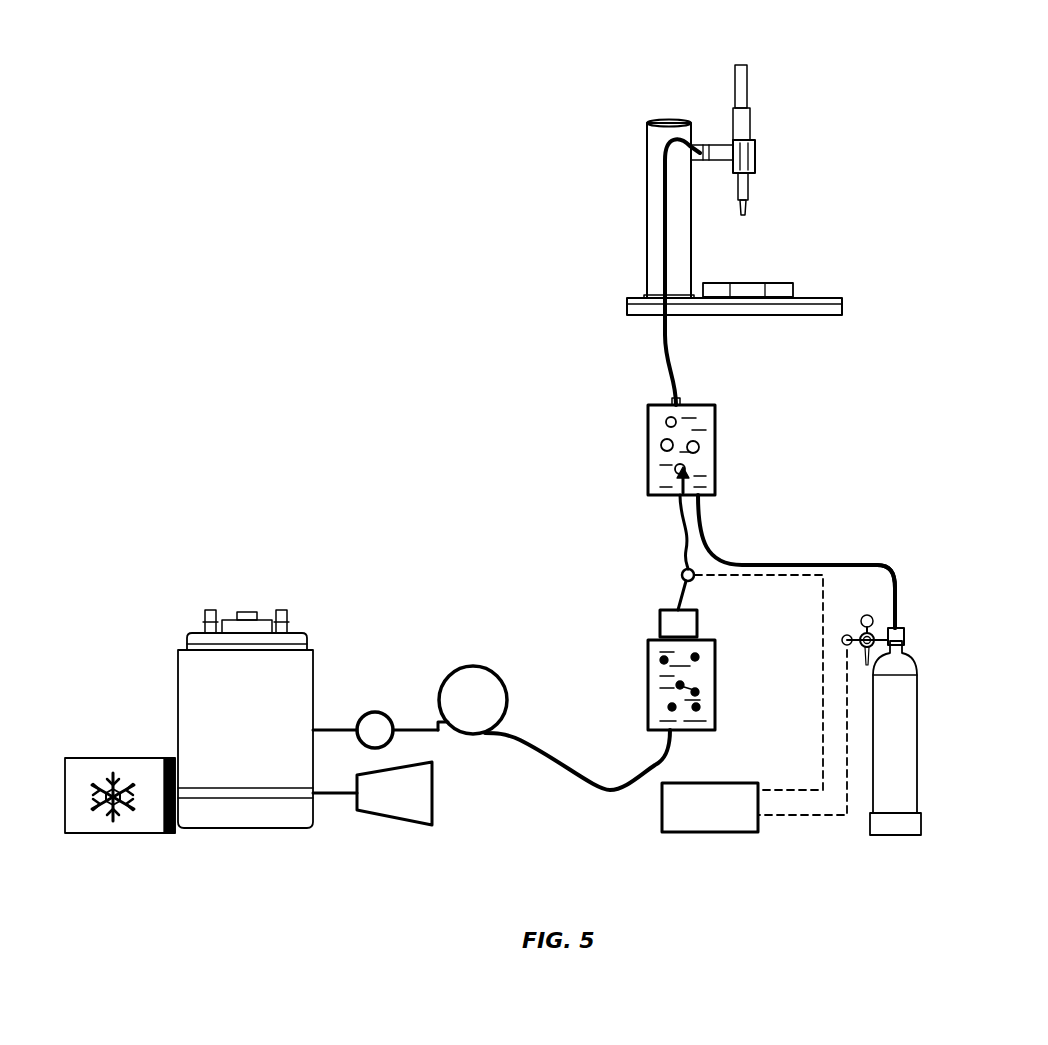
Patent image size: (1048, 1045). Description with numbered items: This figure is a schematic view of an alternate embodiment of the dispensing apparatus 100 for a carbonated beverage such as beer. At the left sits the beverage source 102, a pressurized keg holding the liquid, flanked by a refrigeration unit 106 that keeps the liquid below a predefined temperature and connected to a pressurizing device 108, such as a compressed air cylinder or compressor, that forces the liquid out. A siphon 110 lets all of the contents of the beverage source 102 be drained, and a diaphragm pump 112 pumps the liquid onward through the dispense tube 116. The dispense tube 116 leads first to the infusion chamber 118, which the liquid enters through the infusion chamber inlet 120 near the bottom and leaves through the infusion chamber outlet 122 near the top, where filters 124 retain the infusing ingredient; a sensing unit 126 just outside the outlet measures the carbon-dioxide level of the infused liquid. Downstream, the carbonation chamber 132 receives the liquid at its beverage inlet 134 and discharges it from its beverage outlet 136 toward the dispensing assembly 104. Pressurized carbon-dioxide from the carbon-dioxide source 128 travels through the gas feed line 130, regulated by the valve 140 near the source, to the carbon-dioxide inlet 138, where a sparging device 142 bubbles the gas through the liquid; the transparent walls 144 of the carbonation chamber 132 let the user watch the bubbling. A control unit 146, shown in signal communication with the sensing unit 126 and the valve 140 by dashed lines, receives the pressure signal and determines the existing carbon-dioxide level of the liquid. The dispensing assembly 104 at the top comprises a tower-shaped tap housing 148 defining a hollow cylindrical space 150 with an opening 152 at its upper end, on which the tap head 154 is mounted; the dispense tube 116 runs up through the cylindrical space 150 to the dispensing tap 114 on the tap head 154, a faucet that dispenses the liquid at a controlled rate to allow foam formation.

The dispensing apparatus 100 is at (882, 97).
The beverage source 102 is at (192, 707).
The dispensing assembly 104 is at (599, 136).
The refrigeration unit 106 is at (95, 763).
The pressurizing device 108 is at (412, 803).
The siphon 110 is at (375, 712).
The diaphragm pump 112 is at (455, 687).
The dispensing tap 114 is at (751, 73).
The dispense tube 116 is at (667, 325).
The infusion chamber 118 is at (655, 703).
The infusion chamber inlet 120 is at (672, 732).
The infusion chamber outlet 122 is at (697, 623).
The filters 124 is at (660, 622).
The sensing unit 126 is at (682, 577).
The carbon-dioxide source 128 is at (917, 770).
The gas feed line 130 is at (907, 580).
The carbonation chamber 132 is at (662, 432).
The beverage inlet 134 is at (680, 495).
The beverage outlet 136 is at (676, 404).
The carbon-dioxide inlet 138 is at (710, 497).
The valve 140 is at (905, 640).
The sparging device 142 is at (680, 478).
The transparent walls 144 is at (717, 418).
The control unit 146 is at (754, 703).
The tap housing 148 is at (647, 228).
The hollow cylindrical space 150 is at (683, 243).
The opening 152 is at (668, 125).
The tap head 154 is at (712, 150).